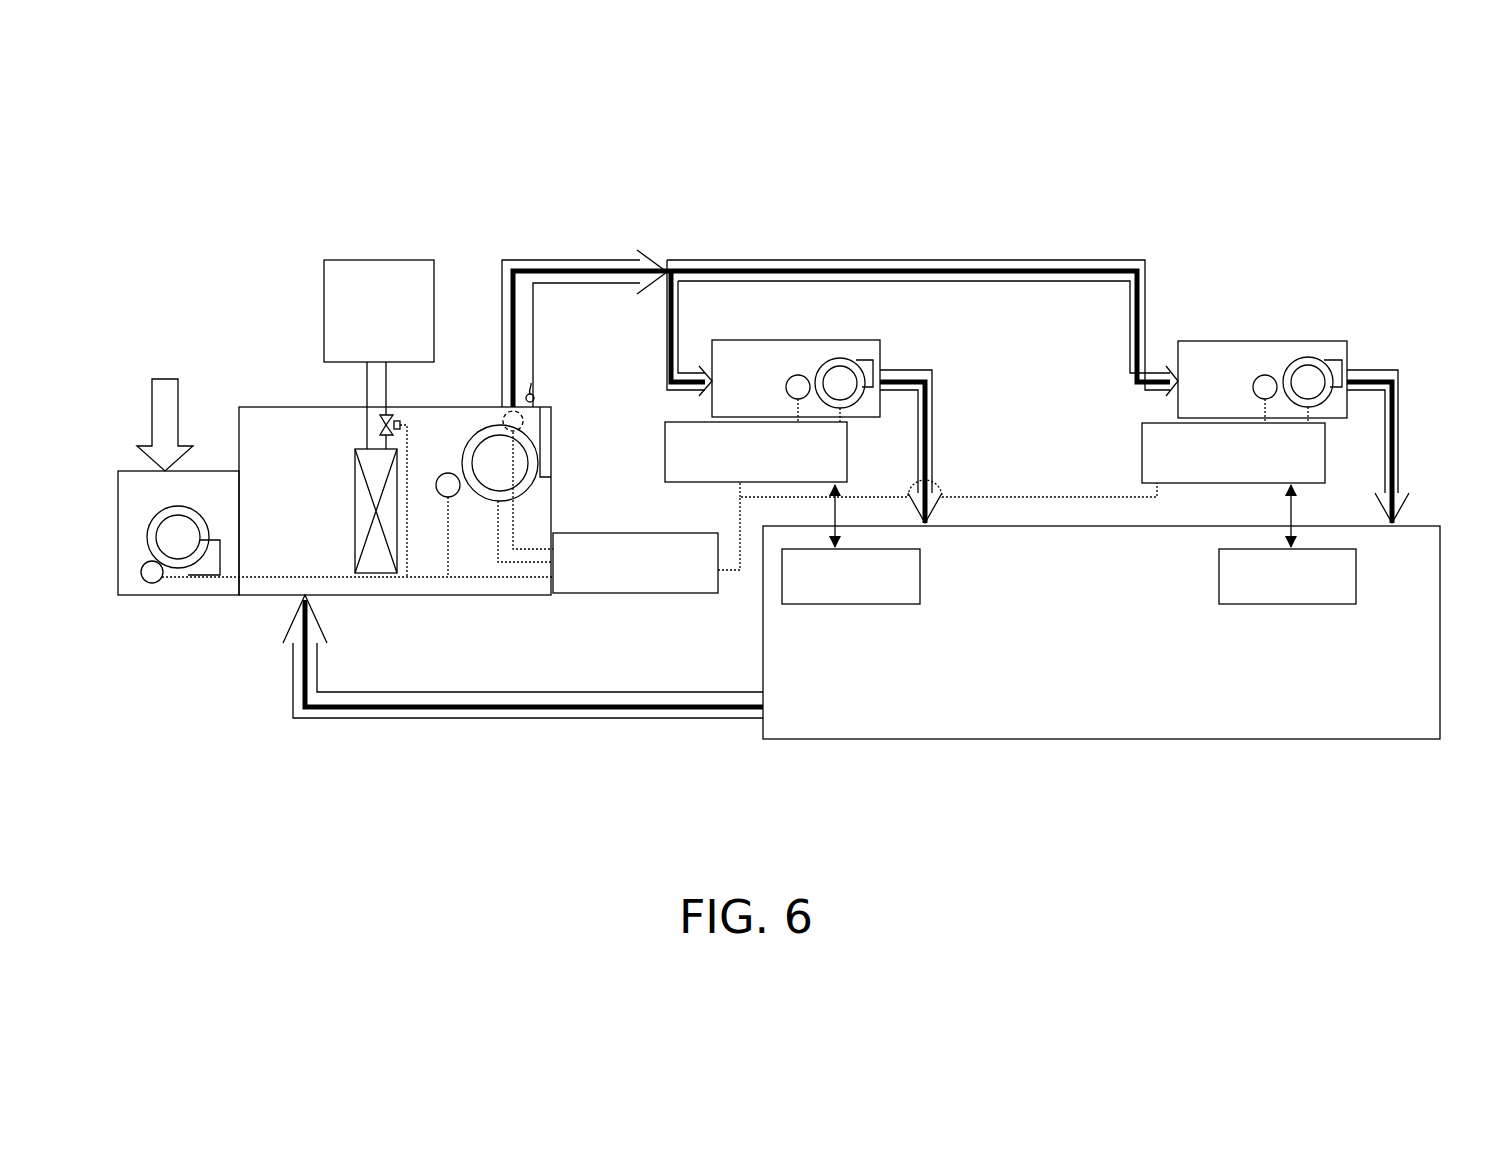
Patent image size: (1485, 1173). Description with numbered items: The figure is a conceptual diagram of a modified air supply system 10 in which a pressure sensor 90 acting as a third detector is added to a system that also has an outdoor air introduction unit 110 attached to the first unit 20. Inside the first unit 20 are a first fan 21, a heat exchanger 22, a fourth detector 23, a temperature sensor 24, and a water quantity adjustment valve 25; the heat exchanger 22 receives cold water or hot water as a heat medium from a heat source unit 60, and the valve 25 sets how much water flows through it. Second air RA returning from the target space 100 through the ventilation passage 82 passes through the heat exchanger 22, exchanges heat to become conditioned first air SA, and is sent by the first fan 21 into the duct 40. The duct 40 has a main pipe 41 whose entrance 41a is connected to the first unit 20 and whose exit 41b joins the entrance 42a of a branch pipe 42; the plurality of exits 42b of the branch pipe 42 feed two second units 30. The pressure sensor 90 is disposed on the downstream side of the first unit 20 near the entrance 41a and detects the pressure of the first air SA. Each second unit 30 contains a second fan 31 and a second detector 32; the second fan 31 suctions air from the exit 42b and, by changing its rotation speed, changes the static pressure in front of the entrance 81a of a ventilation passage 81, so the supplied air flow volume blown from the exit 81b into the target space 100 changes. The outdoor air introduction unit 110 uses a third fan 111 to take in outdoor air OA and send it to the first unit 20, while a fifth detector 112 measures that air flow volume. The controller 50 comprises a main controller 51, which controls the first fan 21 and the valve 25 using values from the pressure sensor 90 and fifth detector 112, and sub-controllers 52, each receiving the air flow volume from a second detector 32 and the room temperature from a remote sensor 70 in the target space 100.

The air supply system 10 is at (1264, 185).
The first unit 20 is at (276, 417).
The first fan 21 is at (556, 478).
The heat exchanger 22 is at (363, 453).
The fourth detector 23 is at (449, 473).
The temperature sensor 24 is at (524, 427).
The water quantity adjustment valve 25 is at (392, 418).
The second unit 30 is at (792, 340).
The second fan 31 is at (856, 368).
The second detector 32 is at (801, 375).
The duct 40 is at (760, 197).
The main pipe 41 is at (587, 262).
The entrance of the main pipe 41a is at (504, 404).
The exit of the main pipe 41b is at (650, 253).
The branch pipe 42 is at (783, 266).
The entrance of the branch pipe 42a is at (664, 279).
The exit of the branch pipe 42b is at (706, 373).
The controller 50 is at (661, 462).
The main controller 51 is at (605, 594).
The sub-controller 52 is at (688, 430).
The heat source unit 60 is at (392, 260).
The remote sensor 70 is at (921, 562).
The ventilation passage 81 is at (934, 396).
The entrance of the ventilation passage 81a is at (890, 369).
The exit of the ventilation passage 81b is at (938, 520).
The ventilation passage 82 is at (300, 688).
The pressure sensor 90 is at (533, 395).
The target space 100 is at (1349, 740).
The outdoor air introduction unit 110 is at (132, 584).
The third fan 111 is at (195, 518).
The fifth detector 112 is at (152, 585).